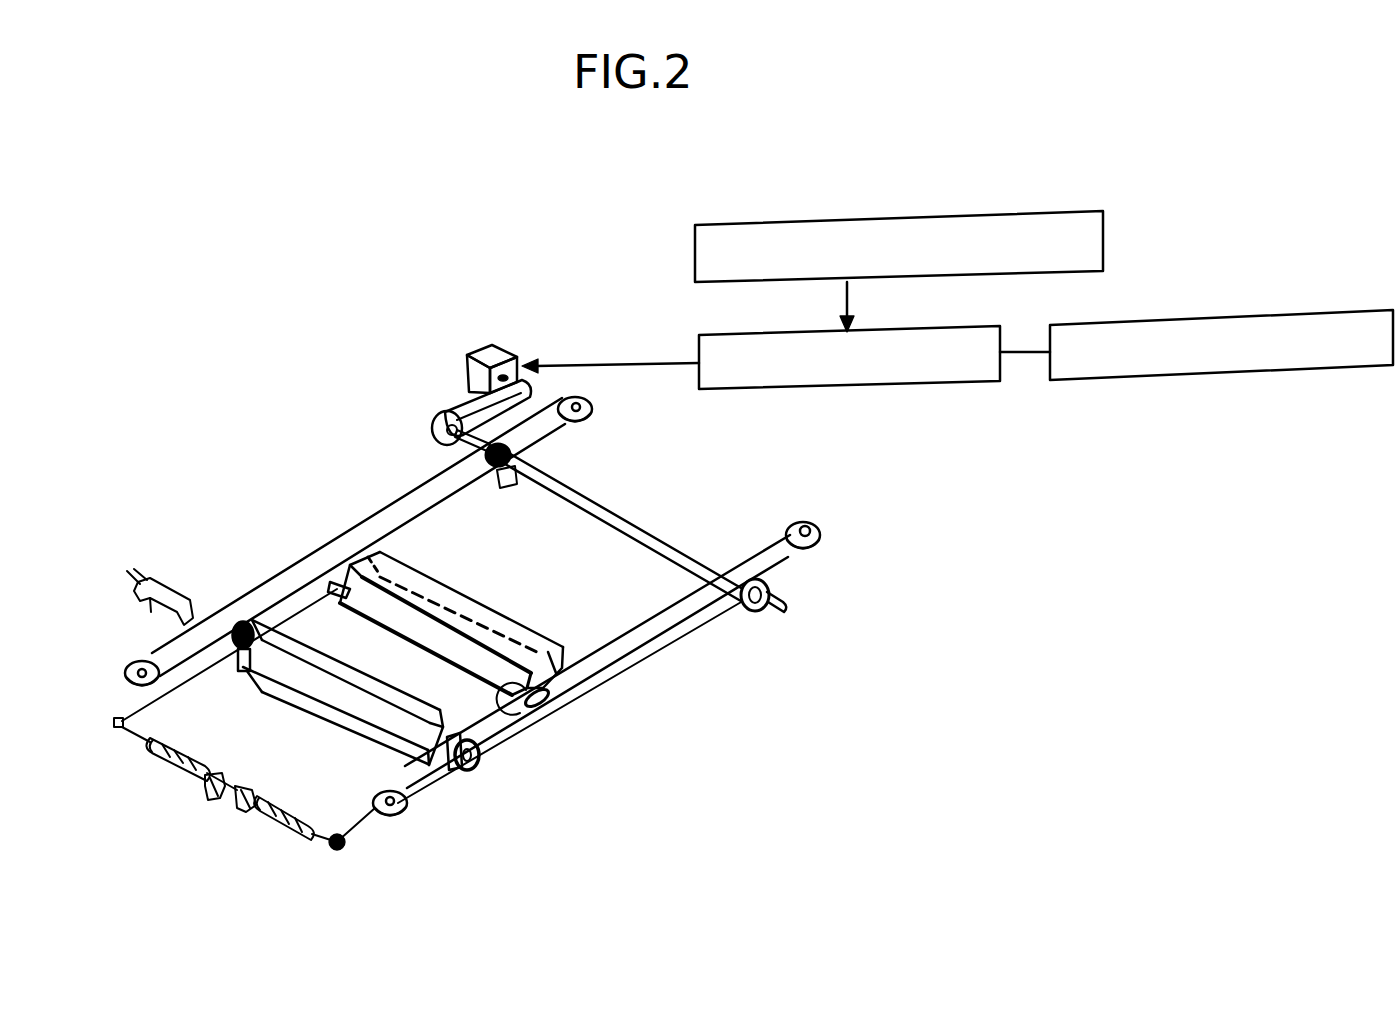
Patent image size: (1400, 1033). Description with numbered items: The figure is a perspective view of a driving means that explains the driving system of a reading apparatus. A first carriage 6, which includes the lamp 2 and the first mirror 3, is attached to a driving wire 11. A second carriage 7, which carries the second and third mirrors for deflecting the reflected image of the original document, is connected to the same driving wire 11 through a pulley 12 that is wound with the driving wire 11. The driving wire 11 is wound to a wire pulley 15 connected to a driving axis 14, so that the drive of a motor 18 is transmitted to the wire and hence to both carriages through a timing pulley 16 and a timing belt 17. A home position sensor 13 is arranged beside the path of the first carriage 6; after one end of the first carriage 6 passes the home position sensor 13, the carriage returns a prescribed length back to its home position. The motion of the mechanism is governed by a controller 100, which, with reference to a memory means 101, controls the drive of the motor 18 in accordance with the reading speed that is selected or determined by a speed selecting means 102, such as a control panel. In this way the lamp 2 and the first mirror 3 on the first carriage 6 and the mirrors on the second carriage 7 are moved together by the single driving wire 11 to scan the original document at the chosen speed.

The lamp 2 is at (456, 582).
The first mirror 3 is at (531, 709).
The first carriage 6 is at (517, 614).
The second carriage 7 is at (292, 689).
The driving wire 11 is at (330, 548).
The pulley 12 is at (238, 622).
The home position sensor 13 is at (152, 598).
The driving axis 14 is at (658, 528).
The wire pulley 15 is at (521, 456).
The timing pulley 16 is at (432, 428).
The timing belt 17 is at (461, 398).
The motor 18 is at (490, 350).
The controller 100 is at (870, 389).
The memory means 101 is at (1223, 377).
The speed selecting means 102 is at (962, 217).